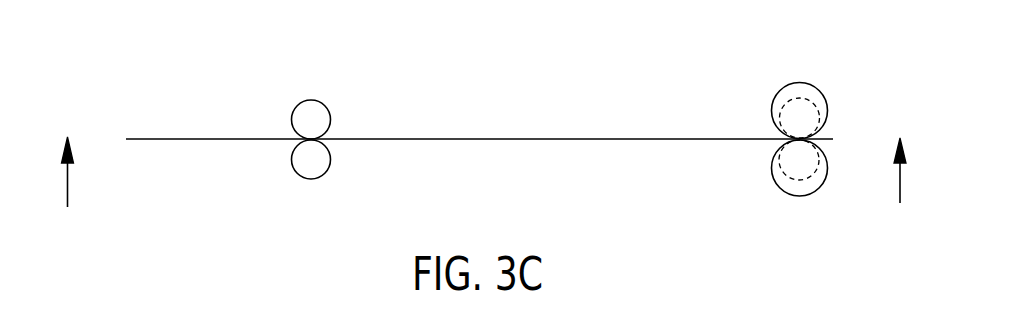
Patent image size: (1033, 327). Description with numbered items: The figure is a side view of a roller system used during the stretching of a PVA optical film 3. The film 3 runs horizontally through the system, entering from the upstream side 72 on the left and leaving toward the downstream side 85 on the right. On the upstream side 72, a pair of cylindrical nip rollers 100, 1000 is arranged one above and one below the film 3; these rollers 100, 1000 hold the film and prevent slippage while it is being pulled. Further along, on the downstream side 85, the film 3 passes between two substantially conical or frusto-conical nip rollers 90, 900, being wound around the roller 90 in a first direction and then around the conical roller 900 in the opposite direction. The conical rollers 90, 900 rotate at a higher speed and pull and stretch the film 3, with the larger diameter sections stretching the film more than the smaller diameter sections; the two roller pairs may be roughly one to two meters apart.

The optical film 3 is at (205, 138).
The cylindrical nip roller 1000 is at (310, 117).
The cylindrical nip roller 100 is at (310, 162).
The conical nip roller 900 is at (793, 92).
The conical nip roller 90 is at (787, 184).
The upstream side 72 is at (67, 187).
The downstream side 85 is at (898, 188).